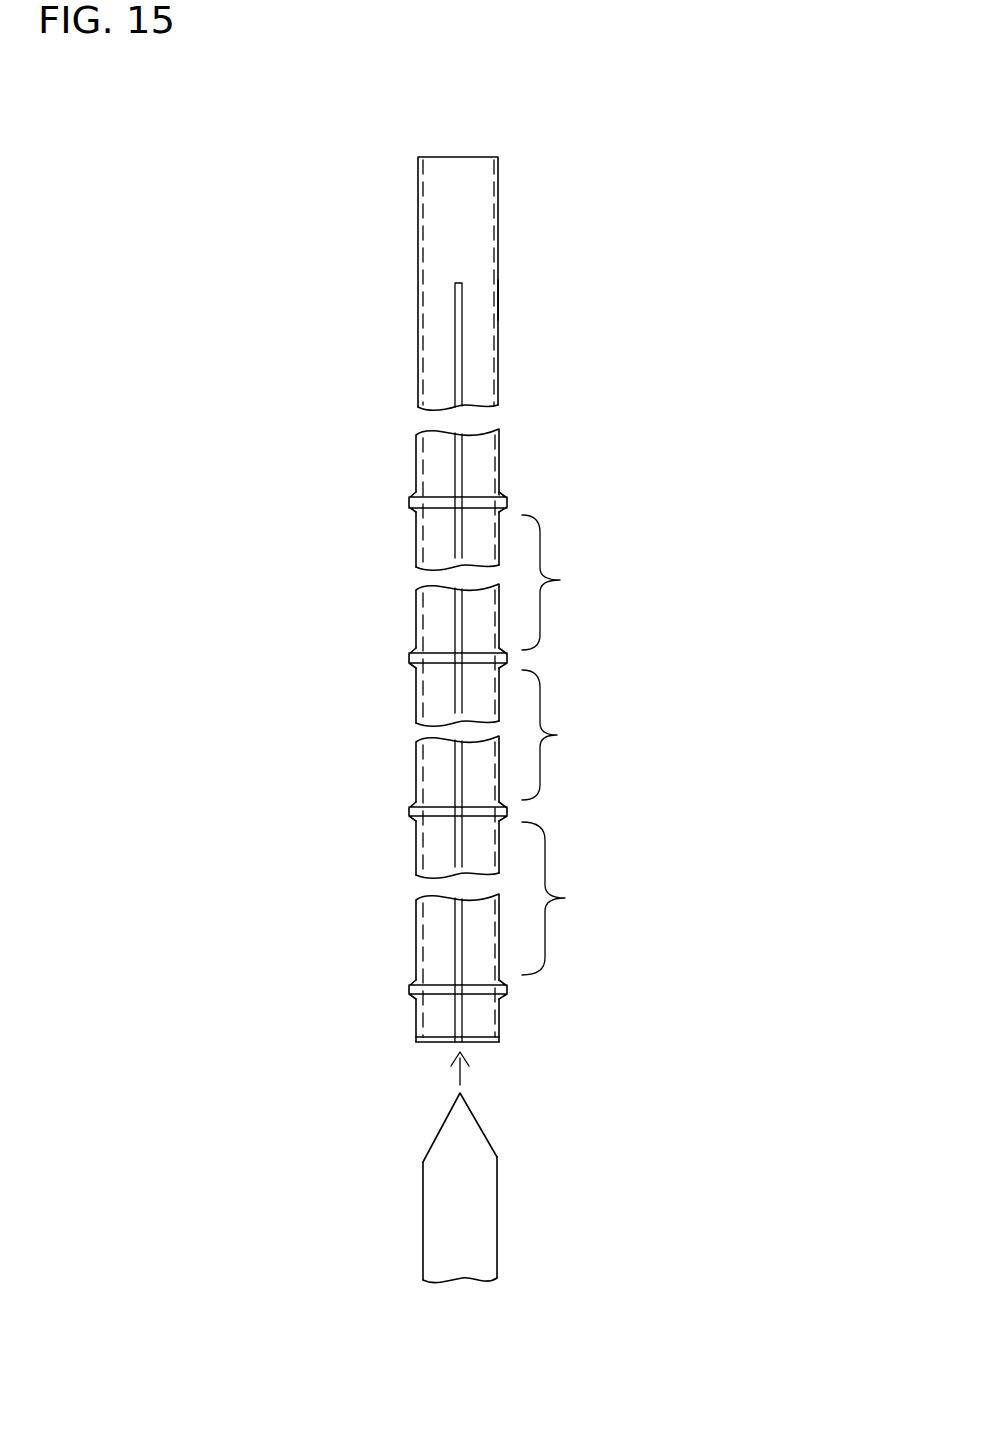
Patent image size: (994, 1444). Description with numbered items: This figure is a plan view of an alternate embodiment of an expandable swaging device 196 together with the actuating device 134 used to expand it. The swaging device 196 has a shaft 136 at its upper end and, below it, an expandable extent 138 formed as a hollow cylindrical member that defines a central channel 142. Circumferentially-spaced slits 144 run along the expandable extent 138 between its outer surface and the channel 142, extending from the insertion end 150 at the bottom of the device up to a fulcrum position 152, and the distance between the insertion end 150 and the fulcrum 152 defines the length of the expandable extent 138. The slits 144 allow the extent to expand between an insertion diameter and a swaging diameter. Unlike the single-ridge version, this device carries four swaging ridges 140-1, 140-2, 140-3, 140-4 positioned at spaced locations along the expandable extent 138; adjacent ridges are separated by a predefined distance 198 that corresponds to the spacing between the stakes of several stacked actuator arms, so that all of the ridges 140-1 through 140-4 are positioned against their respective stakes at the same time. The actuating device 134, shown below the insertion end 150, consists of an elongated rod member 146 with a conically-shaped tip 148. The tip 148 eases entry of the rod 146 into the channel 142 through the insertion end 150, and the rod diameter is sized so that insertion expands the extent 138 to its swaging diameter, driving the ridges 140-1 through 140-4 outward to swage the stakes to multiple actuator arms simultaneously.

The actuating device 134 is at (500, 1167).
The shaft 136 is at (477, 274).
The expandable extent 138 is at (488, 344).
The first swaging ridge 140-1 is at (494, 979).
The second swaging ridge 140-2 is at (508, 810).
The third swaging ridge 140-3 is at (508, 661).
The fourth swaging ridge 140-4 is at (547, 494).
The central channel 142 is at (423, 955).
The slits 144 is at (456, 456).
The elongated rod member 146 is at (488, 1212).
The conically-shaped tip 148 is at (447, 1135).
The insertion end 150 is at (416, 1041).
The fulcrum position 152 is at (457, 283).
The expandable swaging device 196 is at (503, 297).
The predefined distance 198 is at (545, 553).